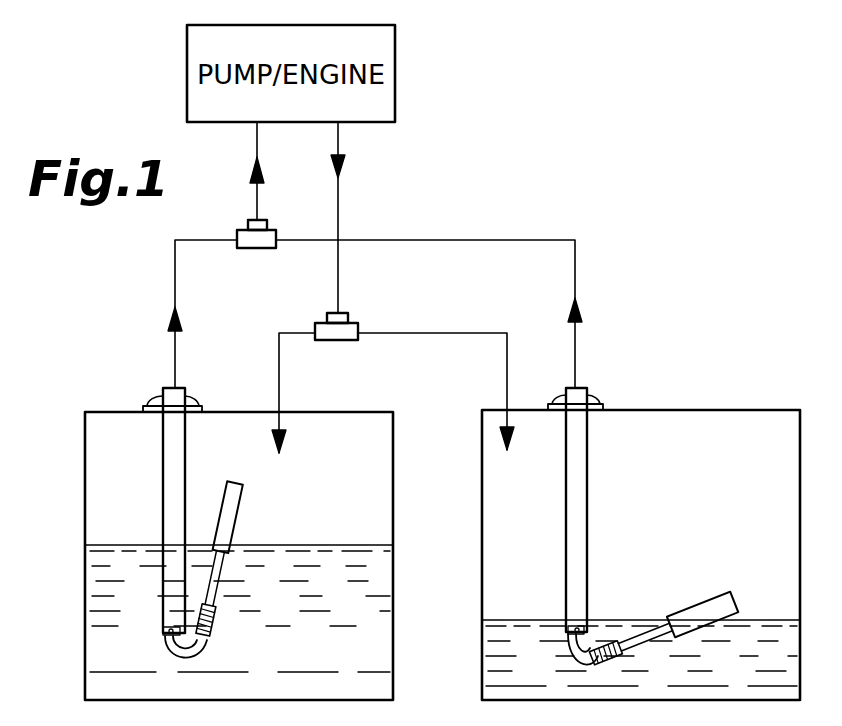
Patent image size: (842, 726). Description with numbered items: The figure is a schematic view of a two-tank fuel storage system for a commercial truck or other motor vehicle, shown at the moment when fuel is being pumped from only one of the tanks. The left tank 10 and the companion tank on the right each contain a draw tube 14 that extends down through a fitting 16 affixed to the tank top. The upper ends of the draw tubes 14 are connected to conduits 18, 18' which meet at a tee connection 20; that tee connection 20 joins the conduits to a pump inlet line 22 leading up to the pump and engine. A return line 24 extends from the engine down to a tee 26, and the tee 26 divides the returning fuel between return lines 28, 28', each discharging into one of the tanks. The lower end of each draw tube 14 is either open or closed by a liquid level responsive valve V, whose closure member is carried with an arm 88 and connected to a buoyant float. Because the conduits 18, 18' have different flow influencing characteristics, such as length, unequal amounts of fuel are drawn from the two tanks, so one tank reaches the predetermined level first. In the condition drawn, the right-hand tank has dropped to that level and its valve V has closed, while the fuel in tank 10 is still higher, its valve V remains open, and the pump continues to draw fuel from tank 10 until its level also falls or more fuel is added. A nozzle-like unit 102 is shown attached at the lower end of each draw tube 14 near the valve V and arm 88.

The fuel storage tank 10 is at (85, 468).
The draw tube 14 is at (178, 472).
The fitting 16 is at (156, 402).
The conduit 18 is at (175, 314).
The conduit 18' is at (429, 287).
The tee connection 20 is at (251, 249).
The pump inlet line 22 is at (257, 193).
The return line 24 is at (340, 198).
The tee 26 is at (358, 321).
The return line 28 is at (305, 393).
The return line 28' is at (436, 391).
The nozzle 102 is at (232, 512).
The arm 88 is at (205, 657).
The liquid level responsive valve V is at (162, 645).